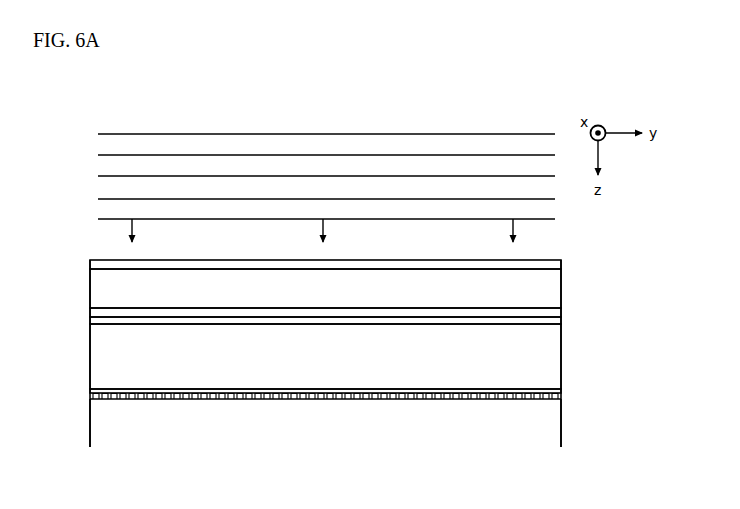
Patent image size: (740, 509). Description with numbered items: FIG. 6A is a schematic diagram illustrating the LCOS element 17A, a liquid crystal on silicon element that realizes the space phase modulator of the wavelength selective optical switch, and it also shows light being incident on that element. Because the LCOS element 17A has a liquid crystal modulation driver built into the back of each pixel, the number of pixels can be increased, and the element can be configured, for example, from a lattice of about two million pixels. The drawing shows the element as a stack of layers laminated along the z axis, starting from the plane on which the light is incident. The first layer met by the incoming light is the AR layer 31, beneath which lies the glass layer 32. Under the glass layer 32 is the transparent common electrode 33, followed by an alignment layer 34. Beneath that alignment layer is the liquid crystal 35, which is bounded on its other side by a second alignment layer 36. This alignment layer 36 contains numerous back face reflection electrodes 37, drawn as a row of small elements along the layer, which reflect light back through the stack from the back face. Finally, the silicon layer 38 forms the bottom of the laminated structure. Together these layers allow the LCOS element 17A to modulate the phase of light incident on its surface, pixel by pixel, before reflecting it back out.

The LCOS element 17A is at (635, 257).
The AR layer 31 is at (562, 264).
The glass layer 32 is at (555, 288).
The transparent common electrode 33 is at (90, 310).
The alignment layer 34 is at (562, 325).
The liquid crystal 35 is at (94, 348).
The alignment layer 36 is at (562, 391).
The back face reflection electrodes 37 is at (90, 396).
The silicon layer 38 is at (555, 433).